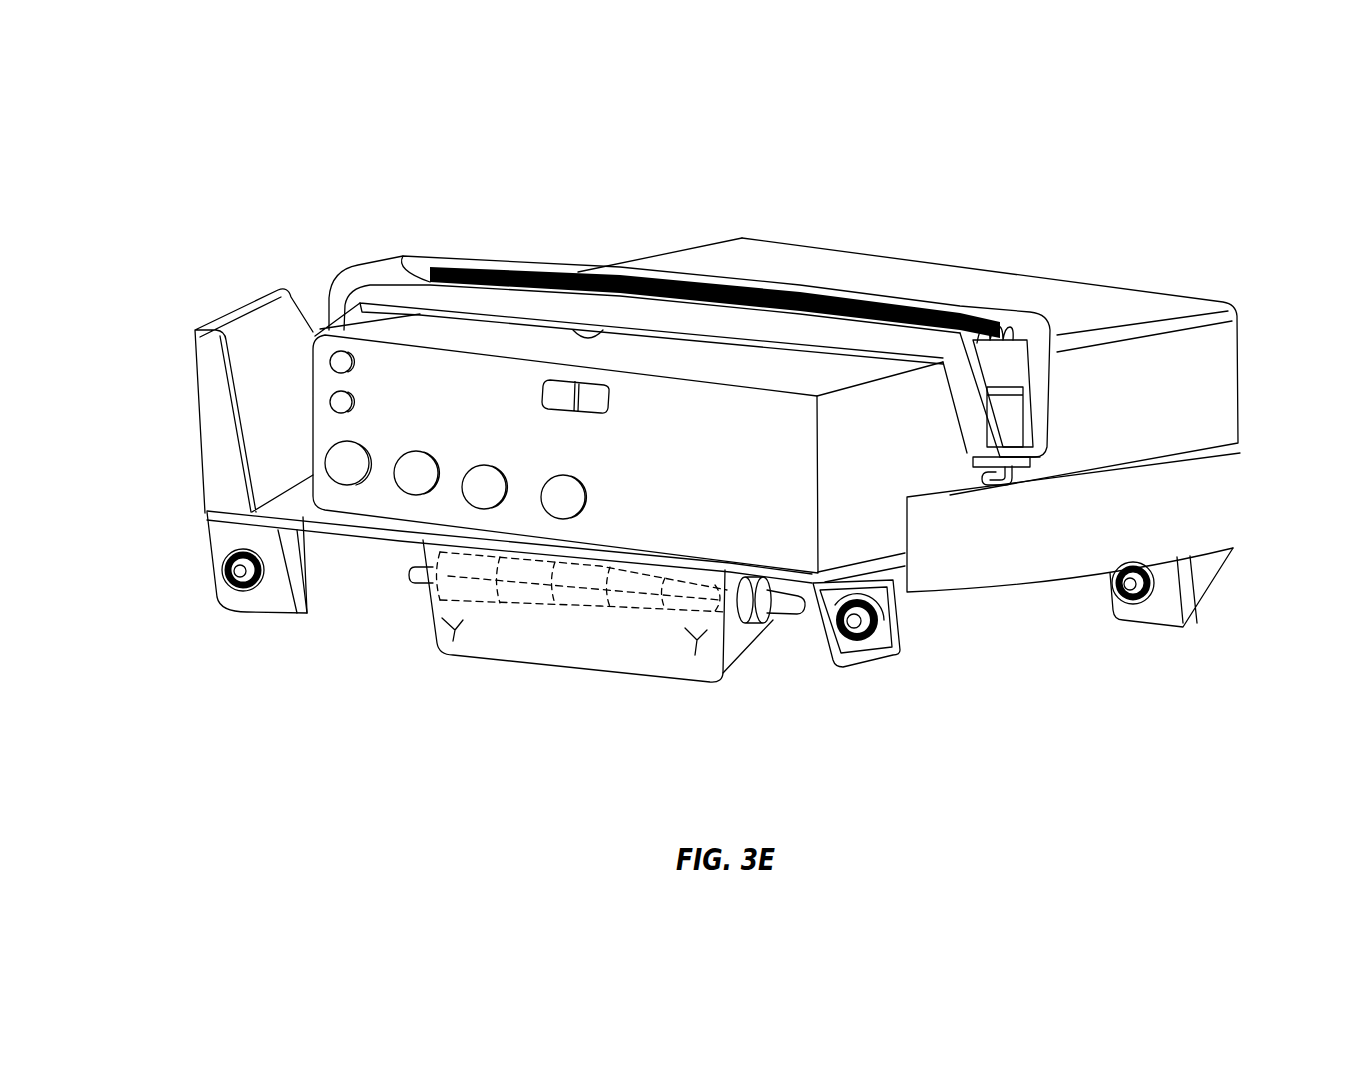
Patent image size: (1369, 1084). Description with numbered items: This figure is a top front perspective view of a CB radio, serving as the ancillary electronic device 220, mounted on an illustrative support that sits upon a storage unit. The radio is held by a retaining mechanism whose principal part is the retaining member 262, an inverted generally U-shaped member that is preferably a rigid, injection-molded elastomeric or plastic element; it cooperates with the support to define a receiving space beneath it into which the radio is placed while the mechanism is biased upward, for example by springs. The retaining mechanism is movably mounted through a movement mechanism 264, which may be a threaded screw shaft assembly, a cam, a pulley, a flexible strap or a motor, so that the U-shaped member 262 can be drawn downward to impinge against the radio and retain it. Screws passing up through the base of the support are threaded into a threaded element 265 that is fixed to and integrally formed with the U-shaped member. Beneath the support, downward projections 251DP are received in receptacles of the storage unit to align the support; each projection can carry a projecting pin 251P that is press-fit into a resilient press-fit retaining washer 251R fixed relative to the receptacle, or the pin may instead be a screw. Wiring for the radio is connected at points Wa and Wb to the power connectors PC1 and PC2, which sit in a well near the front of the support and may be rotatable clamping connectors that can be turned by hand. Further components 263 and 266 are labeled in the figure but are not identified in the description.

The ancillary electronic device 220 is at (775, 264).
The retaining member 262 is at (467, 298).
The top strip 263 is at (567, 323).
The movement mechanism 264 is at (1066, 453).
The threaded element 265 is at (1013, 417).
The hook 266 is at (963, 474).
The resilient press-fit retaining washer 251R is at (205, 547).
The projecting pin 251P is at (224, 587).
The downward projections 251DP is at (278, 603).
The wiring connection point Wa is at (442, 630).
The wiring connection point Wb is at (688, 632).
The power connector PC1 is at (547, 593).
The power connector PC2 is at (633, 593).